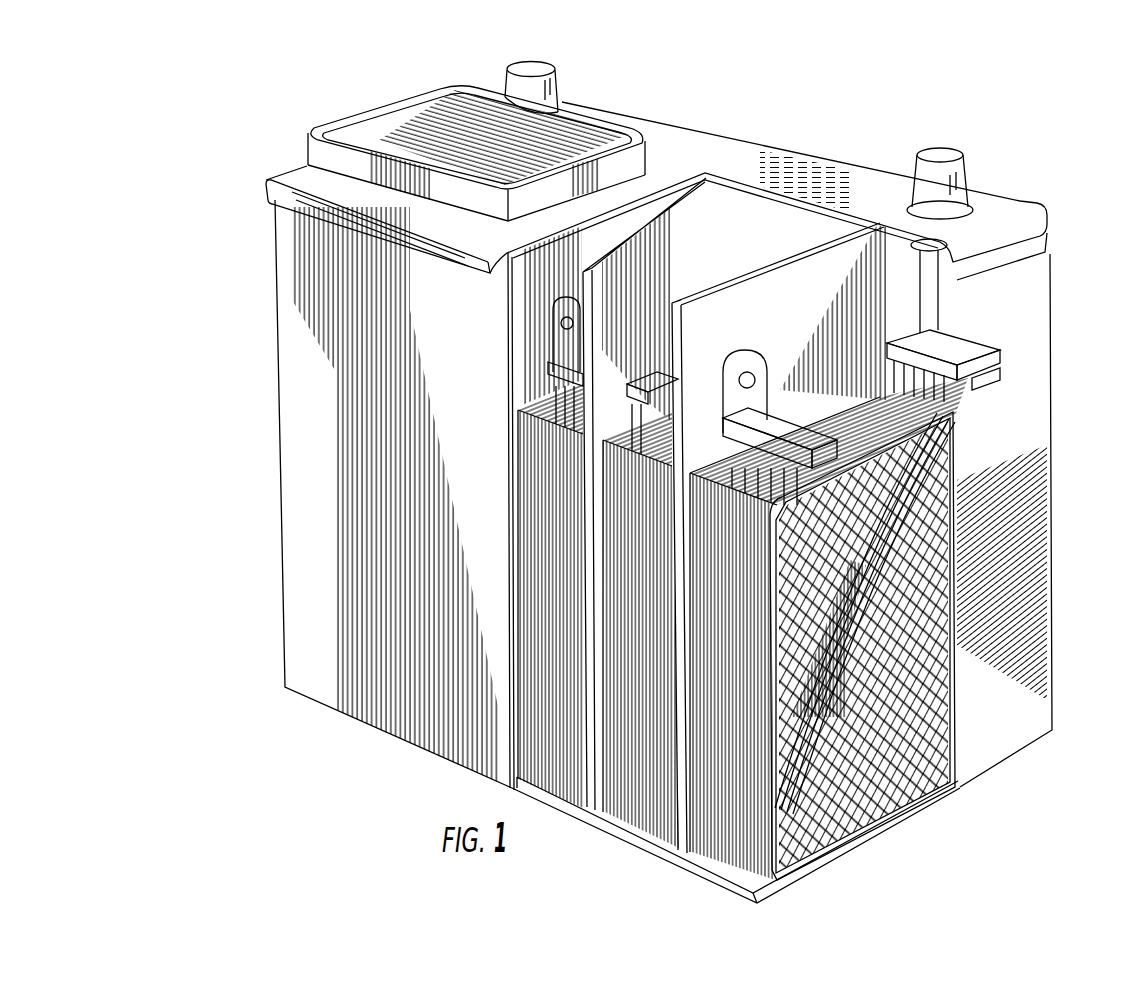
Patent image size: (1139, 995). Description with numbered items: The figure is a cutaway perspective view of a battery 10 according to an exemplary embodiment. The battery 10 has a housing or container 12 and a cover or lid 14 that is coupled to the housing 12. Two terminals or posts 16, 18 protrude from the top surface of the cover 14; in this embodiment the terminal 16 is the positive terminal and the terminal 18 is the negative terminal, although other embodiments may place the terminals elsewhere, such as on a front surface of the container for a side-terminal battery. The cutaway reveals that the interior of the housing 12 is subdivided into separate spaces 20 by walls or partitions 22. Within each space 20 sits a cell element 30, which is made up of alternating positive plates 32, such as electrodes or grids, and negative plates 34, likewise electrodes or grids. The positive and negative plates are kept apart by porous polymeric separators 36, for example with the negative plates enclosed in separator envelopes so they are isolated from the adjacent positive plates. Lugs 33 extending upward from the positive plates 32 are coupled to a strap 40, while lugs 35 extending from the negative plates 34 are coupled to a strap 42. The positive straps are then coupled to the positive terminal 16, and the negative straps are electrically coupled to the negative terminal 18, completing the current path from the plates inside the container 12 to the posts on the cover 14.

The battery 10 is at (291, 142).
The container 12 is at (298, 420).
The cover 14 is at (705, 128).
The positive terminal 16 is at (523, 84).
The negative terminal 18 is at (960, 186).
The space 20 is at (782, 228).
The partition 22 is at (740, 210).
The cell element 30 is at (740, 838).
The positive plate 32 is at (880, 457).
The lug 33 is at (880, 510).
The negative plate 34 is at (937, 703).
The lug 35 is at (975, 387).
The separator 36 is at (853, 613).
The strap 40 is at (810, 464).
The strap 42 is at (985, 350).